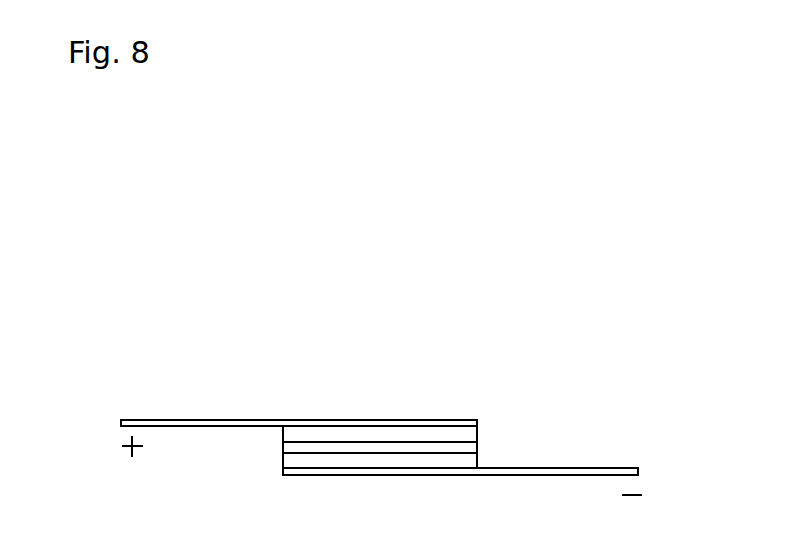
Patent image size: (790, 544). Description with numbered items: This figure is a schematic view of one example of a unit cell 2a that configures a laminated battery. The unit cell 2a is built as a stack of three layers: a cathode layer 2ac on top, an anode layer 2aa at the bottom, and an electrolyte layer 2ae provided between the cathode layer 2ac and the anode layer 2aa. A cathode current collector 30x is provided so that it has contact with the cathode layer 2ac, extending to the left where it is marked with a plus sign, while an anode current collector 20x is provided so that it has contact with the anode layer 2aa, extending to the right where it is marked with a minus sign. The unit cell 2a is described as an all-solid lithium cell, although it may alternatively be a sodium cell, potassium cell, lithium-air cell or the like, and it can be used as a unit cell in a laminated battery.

The cathode current collector 30x is at (120, 420).
The anode current collector 20x is at (638, 468).
The unit cell 2a is at (421, 391).
The cathode layer 2ac is at (479, 432).
The electrolyte layer 2ae is at (479, 447).
The anode layer 2aa is at (479, 461).